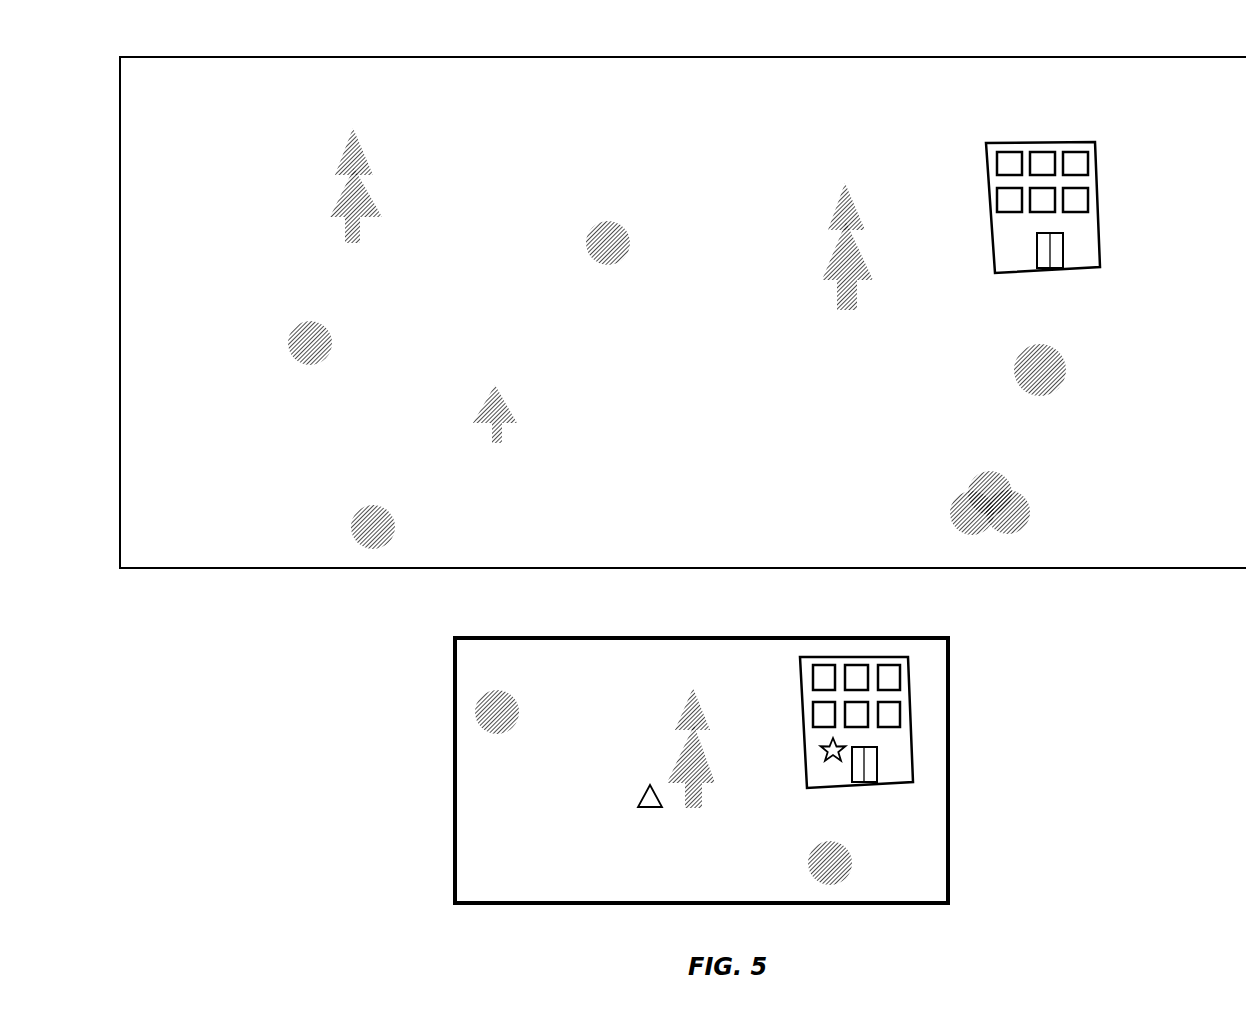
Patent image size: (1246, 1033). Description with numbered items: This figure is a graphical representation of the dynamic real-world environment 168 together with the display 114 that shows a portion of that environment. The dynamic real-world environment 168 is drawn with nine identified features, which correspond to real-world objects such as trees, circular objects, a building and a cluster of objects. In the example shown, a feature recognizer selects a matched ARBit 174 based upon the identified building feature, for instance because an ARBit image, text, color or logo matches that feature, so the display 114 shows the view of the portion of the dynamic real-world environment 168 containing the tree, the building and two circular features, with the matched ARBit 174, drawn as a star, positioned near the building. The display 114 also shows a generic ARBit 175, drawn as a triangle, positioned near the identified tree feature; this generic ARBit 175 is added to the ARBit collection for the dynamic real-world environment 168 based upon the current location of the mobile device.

The dynamic real-world environment 168 is at (683, 312).
The display 114 is at (455, 812).
The matched ARBit 174 is at (822, 752).
The generic ARBit 175 is at (637, 800).